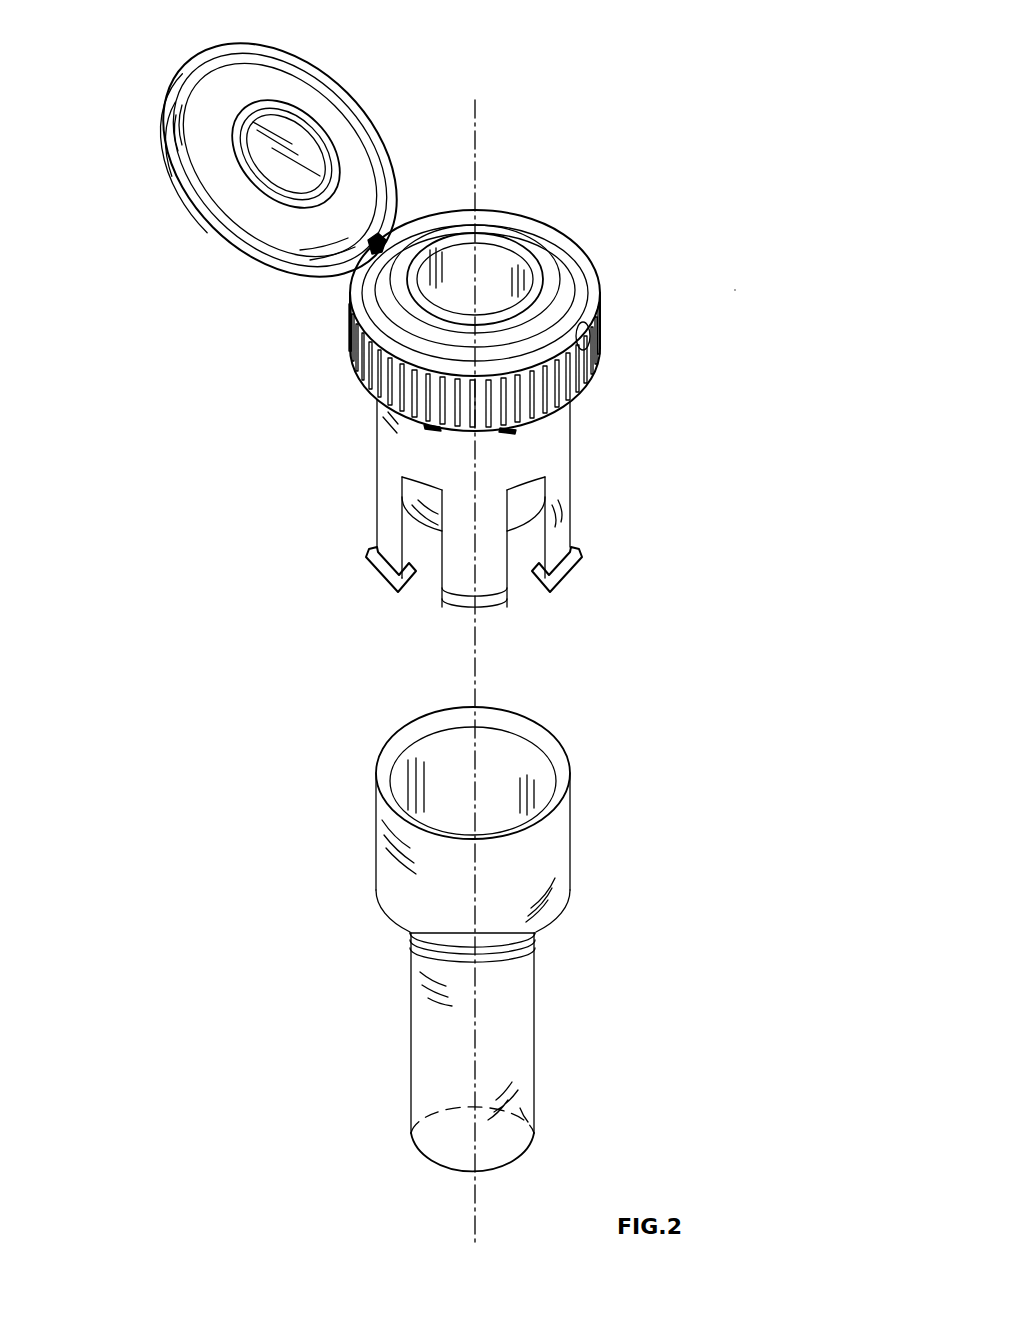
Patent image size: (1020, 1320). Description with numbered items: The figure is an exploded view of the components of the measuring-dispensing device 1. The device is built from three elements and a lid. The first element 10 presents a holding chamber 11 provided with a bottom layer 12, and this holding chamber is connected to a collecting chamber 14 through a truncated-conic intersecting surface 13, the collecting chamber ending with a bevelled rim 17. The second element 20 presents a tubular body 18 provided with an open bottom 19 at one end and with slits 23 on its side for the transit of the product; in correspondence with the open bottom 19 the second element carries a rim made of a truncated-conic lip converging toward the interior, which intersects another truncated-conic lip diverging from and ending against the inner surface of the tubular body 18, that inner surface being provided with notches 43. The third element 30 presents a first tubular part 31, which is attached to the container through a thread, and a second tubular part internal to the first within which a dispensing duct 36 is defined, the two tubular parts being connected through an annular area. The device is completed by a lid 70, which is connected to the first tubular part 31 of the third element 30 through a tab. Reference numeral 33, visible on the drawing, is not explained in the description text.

The measuring-dispensing device 1 is at (747, 283).
The first element 10 is at (626, 926).
The holding chamber 11 is at (442, 1048).
The bottom layer 12 is at (462, 1148).
The truncated-conic intersecting surface 13 is at (428, 948).
The collecting chamber 14 is at (548, 845).
The bevelled rim 17 is at (550, 752).
The tubular body 18 is at (548, 457).
The open bottom 19 is at (425, 579).
The second element 20 is at (604, 430).
The slits 23 is at (512, 430).
The third element 30 is at (607, 241).
The first tubular part 31 is at (372, 370).
The central tube 33 is at (508, 540).
The dispensing duct 36 is at (499, 253).
The notches 43 is at (409, 553).
The lid 70 is at (170, 204).